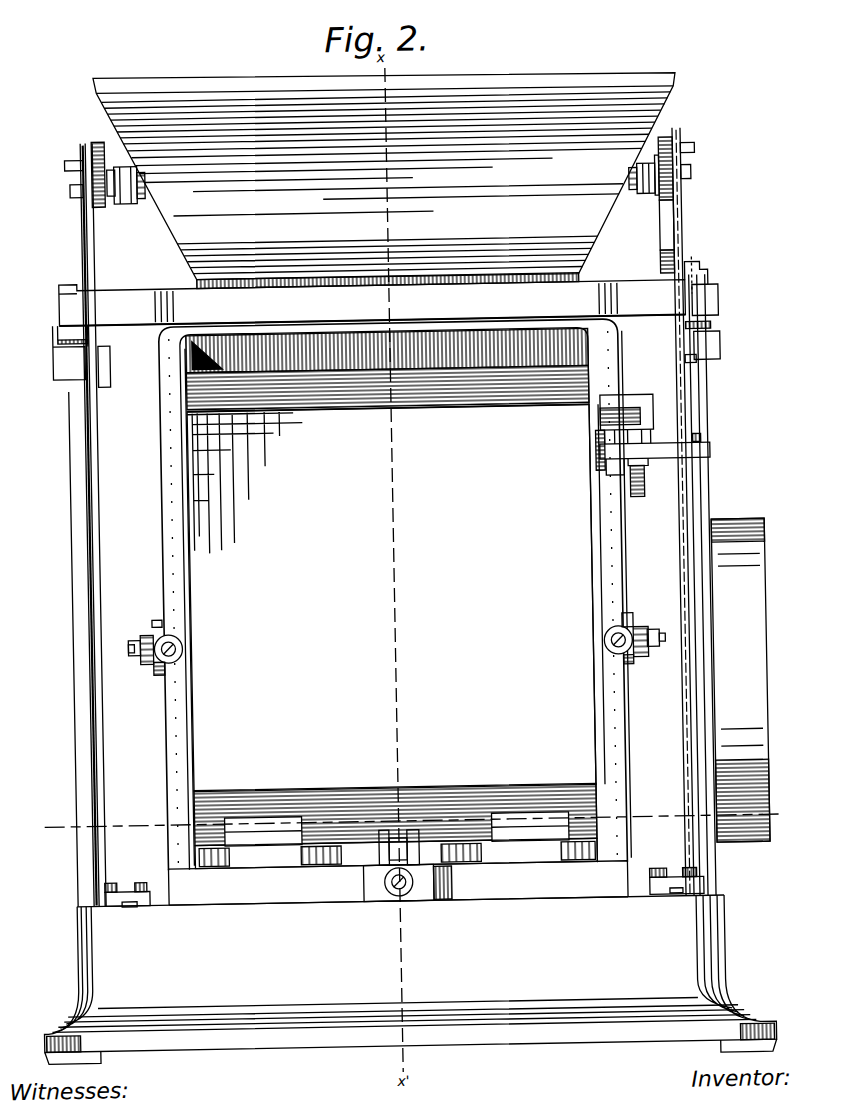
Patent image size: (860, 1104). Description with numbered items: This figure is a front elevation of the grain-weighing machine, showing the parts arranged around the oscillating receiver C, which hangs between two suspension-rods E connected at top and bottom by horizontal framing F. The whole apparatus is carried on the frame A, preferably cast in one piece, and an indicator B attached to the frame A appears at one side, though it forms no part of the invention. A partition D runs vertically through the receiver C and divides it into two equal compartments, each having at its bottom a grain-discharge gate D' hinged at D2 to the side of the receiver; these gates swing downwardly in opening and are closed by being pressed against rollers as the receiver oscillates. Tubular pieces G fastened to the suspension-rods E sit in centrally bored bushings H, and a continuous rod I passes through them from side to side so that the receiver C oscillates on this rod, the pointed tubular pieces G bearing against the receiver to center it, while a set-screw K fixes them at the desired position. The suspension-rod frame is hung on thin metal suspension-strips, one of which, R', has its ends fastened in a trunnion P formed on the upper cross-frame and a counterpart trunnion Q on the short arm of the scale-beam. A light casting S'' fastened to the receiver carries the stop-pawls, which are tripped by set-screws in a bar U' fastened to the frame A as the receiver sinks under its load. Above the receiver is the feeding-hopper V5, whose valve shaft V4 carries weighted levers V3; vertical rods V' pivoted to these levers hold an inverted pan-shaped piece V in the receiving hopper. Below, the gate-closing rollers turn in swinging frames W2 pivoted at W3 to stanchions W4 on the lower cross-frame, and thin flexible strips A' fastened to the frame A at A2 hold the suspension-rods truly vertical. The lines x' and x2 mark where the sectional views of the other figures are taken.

The frame A is at (409, 979).
The flexible metallic strips A' is at (402, 906).
The strip fastening points A2 is at (120, 888).
The indicator B is at (740, 680).
The oscillating receiver C is at (391, 597).
The partition D is at (387, 369).
The grain-discharge gates D' is at (395, 825).
The gate hinges D2 is at (258, 841).
The suspension-rods E is at (395, 594).
The horizontal framing F is at (372, 300).
The tubular pieces G is at (140, 660).
The bushings H is at (155, 666).
The continuous rod I is at (395, 635).
The set-screw K is at (608, 656).
The trunnion P is at (716, 307).
The trunnion Q is at (708, 347).
The suspension-strip R' is at (721, 324).
The stop-pawl casting S'' is at (625, 437).
The bar U' is at (655, 443).
The inverted pan-shaped piece V is at (630, 477).
The vertical rods V' is at (382, 517).
The levers V3 is at (100, 138).
The shaft V4 is at (145, 192).
The feeding-hopper V5 is at (386, 179).
The swinging frames W2 is at (396, 853).
The pivots W3 is at (379, 876).
The stanchions W4 is at (386, 848).
The section line x' is at (695, 261).
The section line x2 is at (414, 815).